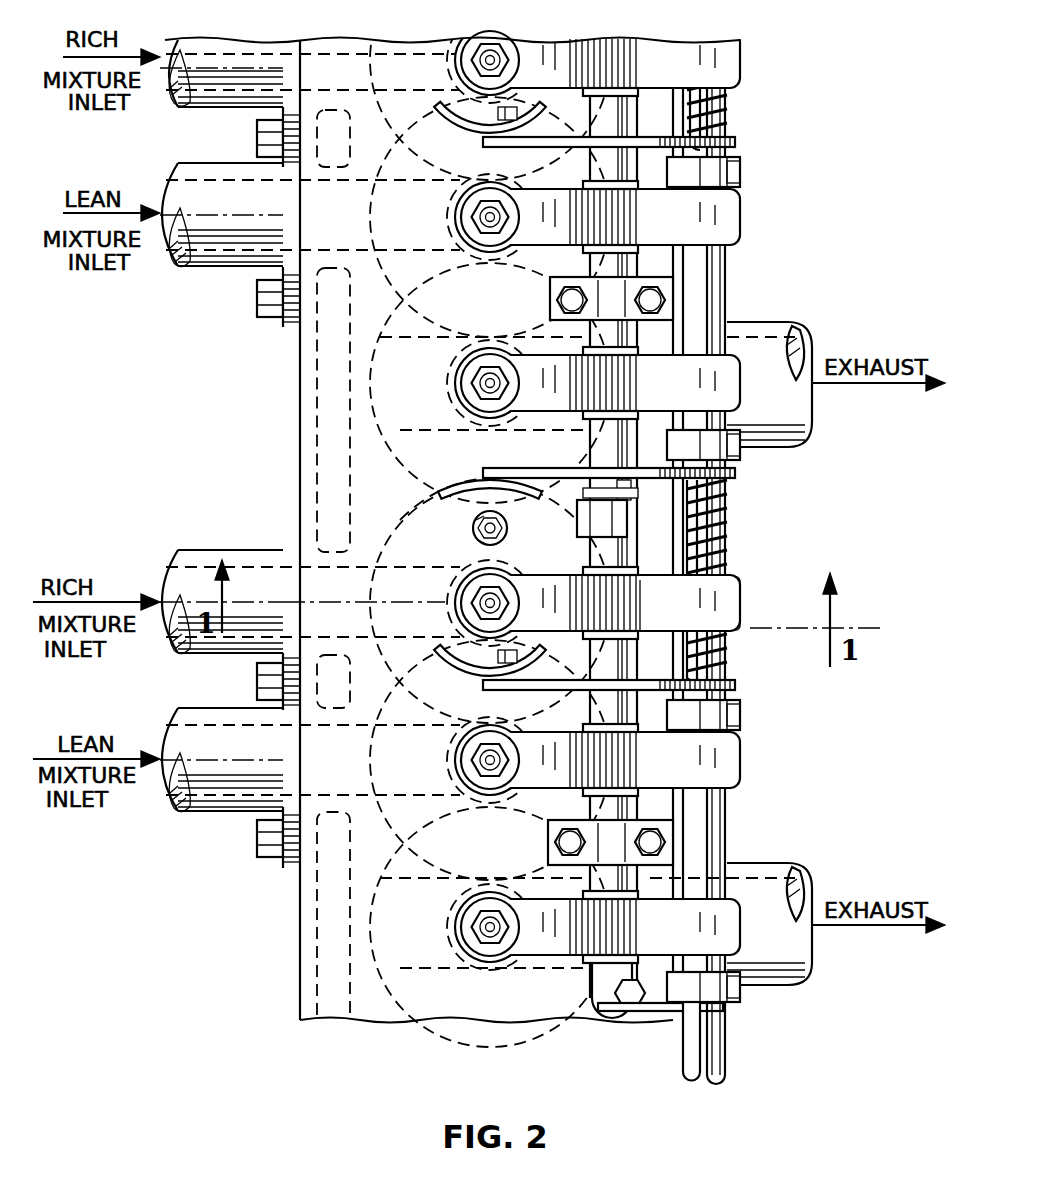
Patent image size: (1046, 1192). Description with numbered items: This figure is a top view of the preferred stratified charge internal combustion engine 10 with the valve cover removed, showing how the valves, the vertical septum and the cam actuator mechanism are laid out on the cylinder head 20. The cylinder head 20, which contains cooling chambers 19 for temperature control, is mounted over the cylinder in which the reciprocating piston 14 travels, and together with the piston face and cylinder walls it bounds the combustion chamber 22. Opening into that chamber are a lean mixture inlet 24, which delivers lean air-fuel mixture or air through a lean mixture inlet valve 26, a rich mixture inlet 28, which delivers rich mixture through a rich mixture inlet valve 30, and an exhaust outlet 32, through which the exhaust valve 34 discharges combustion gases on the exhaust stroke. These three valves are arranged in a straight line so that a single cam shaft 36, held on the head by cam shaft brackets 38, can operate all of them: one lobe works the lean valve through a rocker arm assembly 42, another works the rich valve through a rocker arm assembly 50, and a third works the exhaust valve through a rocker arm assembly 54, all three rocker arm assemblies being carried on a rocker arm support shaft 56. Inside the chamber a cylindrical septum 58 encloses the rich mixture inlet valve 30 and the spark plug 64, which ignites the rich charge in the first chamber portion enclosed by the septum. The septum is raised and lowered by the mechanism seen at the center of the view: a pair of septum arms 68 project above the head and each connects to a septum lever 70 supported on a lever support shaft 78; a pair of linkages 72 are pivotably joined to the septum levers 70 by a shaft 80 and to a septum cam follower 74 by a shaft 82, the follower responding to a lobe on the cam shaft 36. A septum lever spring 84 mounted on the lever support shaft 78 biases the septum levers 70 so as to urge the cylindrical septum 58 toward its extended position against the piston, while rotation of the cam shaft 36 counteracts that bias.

The internal combustion engine 10 is at (290, 365).
The reciprocating piston 14 is at (432, 135).
The cooling chambers 19 is at (325, 450).
The cylinder head 20 is at (325, 412).
The combustion chamber 22 is at (378, 205).
The lean mixture inlet 24 is at (215, 268).
The lean mixture inlet valve 26 is at (432, 255).
The rich mixture inlet 28 is at (215, 108).
The rich mixture inlet valve 30 is at (455, 40).
The exhaust outlet 32 is at (768, 330).
The exhaust valve 34 is at (440, 412).
The cam shaft 36 is at (728, 282).
The cam shaft brackets 38 is at (742, 163).
The rocker arm assembly 42 is at (725, 225).
The rocker arm assembly 50 is at (745, 72).
The rocker arm assembly 54 is at (742, 386).
The rocker arm support shaft 56 is at (596, 121).
The cylindrical septum 58 is at (412, 500).
The spark plug 64 is at (472, 530).
The septum arms 68 is at (470, 132).
The septum lever 70 is at (578, 148).
The linkages 72 is at (657, 605).
The septum cam follower 74 is at (585, 516).
The lever support shaft 78 is at (727, 58).
The shaft 80 is at (678, 117).
The shaft 82 is at (632, 478).
The septum lever spring 84 is at (730, 120).